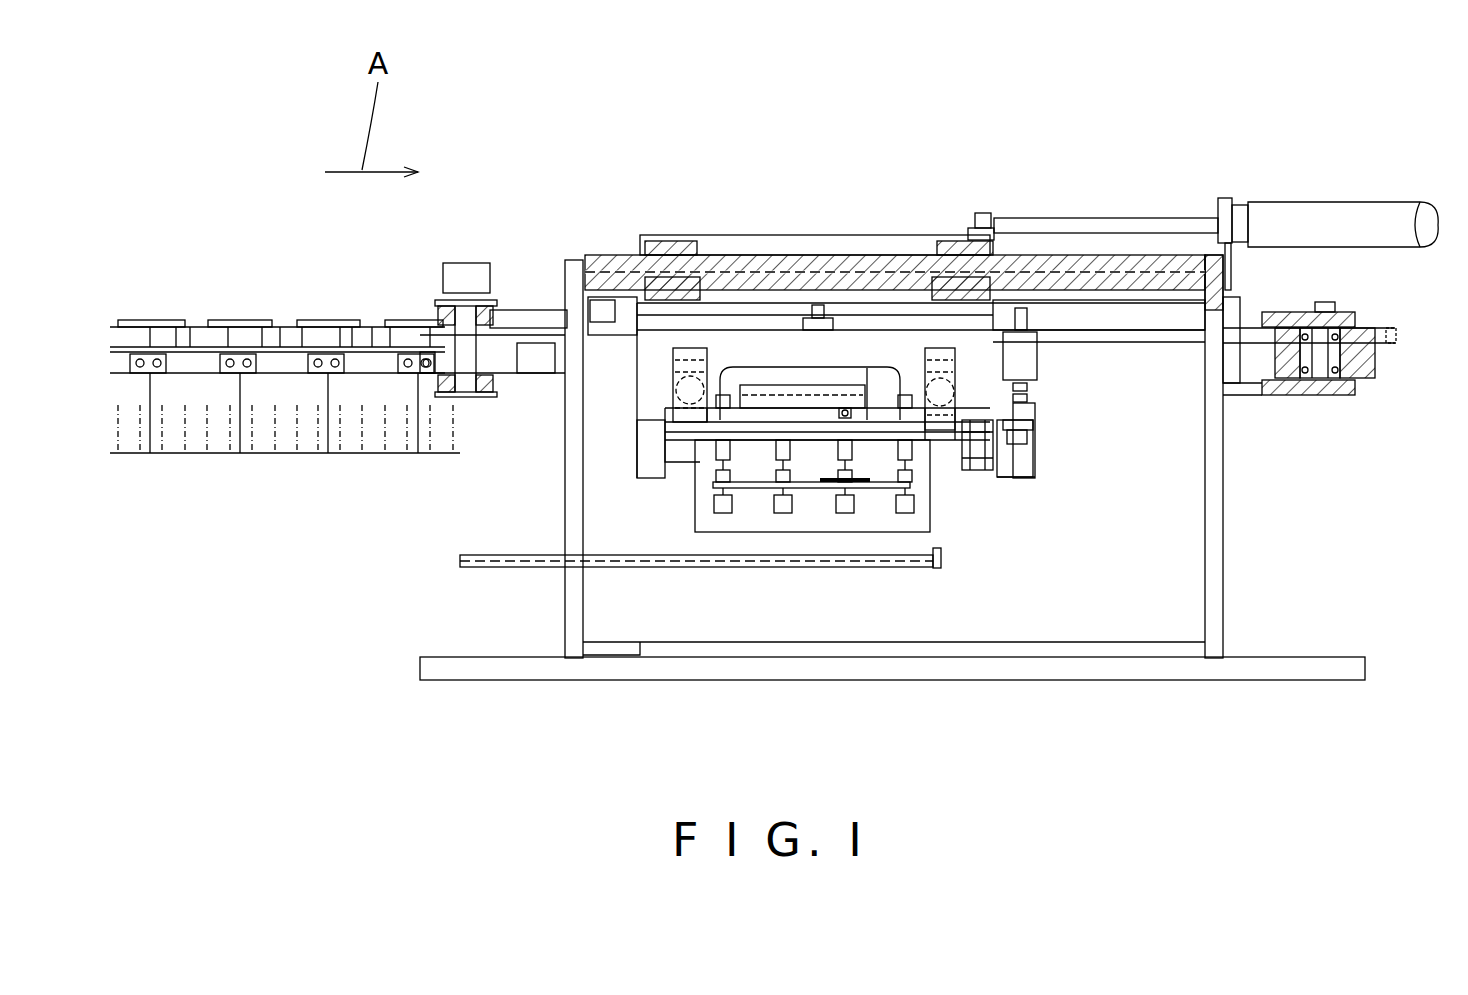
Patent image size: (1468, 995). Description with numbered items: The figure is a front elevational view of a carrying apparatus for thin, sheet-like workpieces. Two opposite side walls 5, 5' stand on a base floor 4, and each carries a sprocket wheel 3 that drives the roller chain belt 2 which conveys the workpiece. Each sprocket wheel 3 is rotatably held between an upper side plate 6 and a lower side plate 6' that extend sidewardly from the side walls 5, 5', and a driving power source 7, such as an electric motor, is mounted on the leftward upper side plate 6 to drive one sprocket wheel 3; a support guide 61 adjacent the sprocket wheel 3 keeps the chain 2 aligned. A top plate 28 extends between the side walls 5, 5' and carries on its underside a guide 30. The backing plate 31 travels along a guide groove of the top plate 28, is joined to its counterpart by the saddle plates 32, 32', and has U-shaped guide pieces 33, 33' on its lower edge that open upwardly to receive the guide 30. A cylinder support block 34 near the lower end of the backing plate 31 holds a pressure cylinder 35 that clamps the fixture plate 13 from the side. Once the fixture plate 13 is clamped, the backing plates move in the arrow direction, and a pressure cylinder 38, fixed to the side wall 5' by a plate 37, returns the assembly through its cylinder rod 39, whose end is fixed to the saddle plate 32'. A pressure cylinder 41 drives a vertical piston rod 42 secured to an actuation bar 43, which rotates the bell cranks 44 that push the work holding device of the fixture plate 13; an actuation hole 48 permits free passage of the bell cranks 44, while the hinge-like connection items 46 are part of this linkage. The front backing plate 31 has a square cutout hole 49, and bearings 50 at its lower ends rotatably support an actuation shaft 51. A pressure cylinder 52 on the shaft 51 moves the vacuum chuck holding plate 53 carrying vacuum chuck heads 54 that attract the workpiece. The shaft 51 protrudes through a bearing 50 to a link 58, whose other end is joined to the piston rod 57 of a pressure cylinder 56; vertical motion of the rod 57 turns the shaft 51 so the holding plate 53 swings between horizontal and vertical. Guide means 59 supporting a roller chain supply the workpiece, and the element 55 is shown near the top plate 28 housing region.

The roller chain belt 2 is at (325, 312).
The sprocket wheels 3 is at (535, 385).
The base floor 4 is at (1258, 682).
The side wall 5 is at (549, 459).
The side wall 5' is at (1241, 456).
The upper side plate 6 is at (887, 308).
The lower side plate 6' is at (895, 415).
The driving power source 7 is at (467, 273).
The fixture plate 13 is at (392, 455).
The top plate 28 is at (878, 270).
The guide 30 is at (830, 262).
The backing plate 31 is at (775, 262).
The saddle plate 32 is at (672, 209).
The saddle plate 32' is at (964, 208).
The U-shaped guide piece 33 is at (644, 260).
The U-shaped guide piece 33' is at (998, 235).
The cylinder support block 34 is at (673, 362).
The pressure cylinder 35 is at (680, 383).
The plate 37 is at (1235, 265).
The pressure cylinder 38 is at (1370, 205).
The cylinder rod 39 is at (1088, 218).
The pressure cylinder 41 is at (788, 335).
The piston rod 42 is at (812, 405).
The actuation bar 43 is at (758, 410).
The bell cranks 44 is at (680, 428).
The bolt 46 is at (680, 462).
The actuation hole 48 is at (880, 408).
The cutout hole 49 is at (740, 335).
The bearings 50 is at (642, 480).
The actuation shaft 51 is at (945, 455).
The pressure cylinder 52 is at (875, 532).
The vacuum chuck holding plate 53 is at (760, 532).
The vacuum chuck heads 54 is at (705, 535).
The upper box 55 is at (1005, 312).
The pressure cylinder 56 is at (1037, 352).
The piston rod 57 is at (1030, 412).
The link 58 is at (1037, 457).
The guide means 59 is at (622, 568).
The support guide 61 is at (1162, 340).